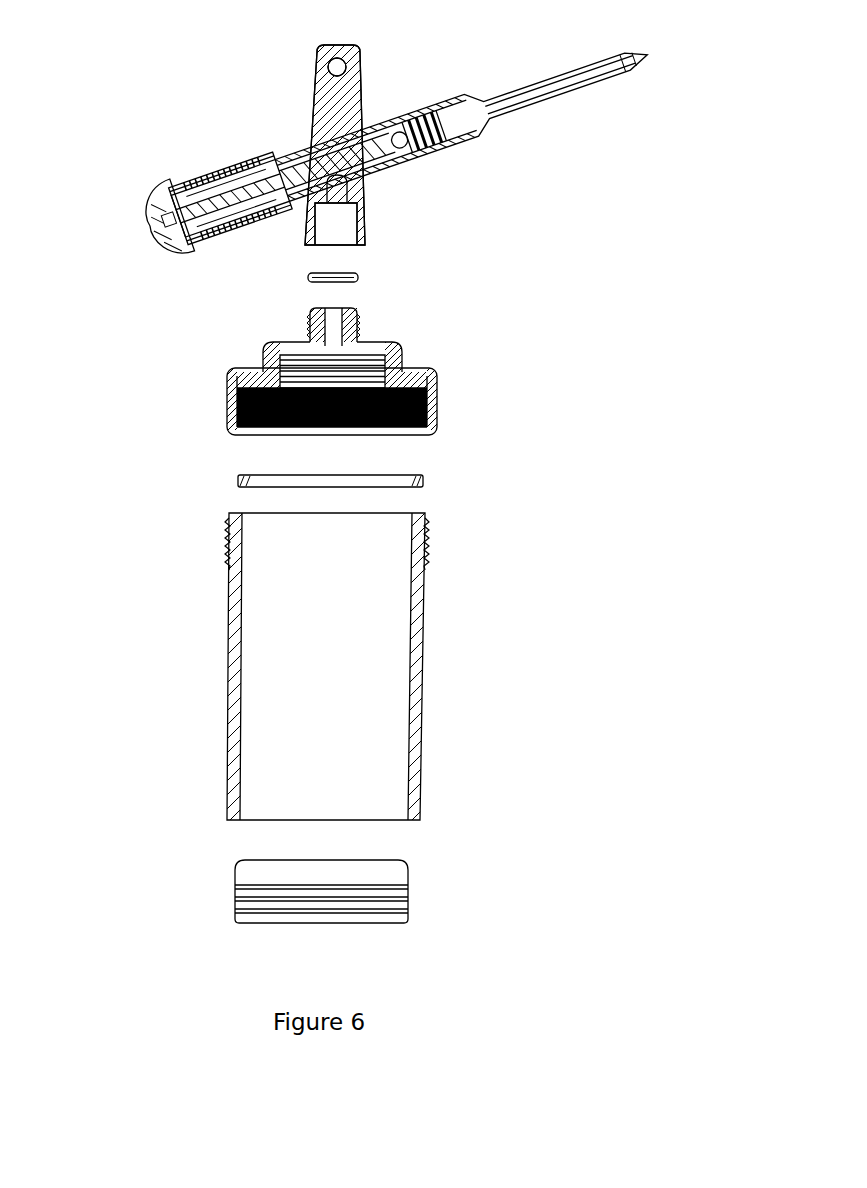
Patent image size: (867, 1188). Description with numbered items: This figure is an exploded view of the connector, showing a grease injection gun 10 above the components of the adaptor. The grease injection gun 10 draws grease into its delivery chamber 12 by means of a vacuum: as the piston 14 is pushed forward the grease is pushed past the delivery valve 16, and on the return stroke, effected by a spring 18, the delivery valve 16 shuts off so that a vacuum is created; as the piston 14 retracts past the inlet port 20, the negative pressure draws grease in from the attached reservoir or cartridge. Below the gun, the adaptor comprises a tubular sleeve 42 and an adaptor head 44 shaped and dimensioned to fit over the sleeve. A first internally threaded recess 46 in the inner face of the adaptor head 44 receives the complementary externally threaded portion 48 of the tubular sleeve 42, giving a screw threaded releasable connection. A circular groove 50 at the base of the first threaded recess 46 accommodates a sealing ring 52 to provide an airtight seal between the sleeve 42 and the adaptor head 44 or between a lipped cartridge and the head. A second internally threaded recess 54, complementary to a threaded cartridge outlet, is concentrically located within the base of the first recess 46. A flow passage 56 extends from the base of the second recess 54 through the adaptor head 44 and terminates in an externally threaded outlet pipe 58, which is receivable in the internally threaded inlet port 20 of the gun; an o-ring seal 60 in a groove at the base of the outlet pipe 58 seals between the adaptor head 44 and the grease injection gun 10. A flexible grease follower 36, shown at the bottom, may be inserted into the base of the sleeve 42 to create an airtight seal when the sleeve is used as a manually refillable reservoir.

The grease injection gun 10 is at (310, 77).
The delivery chamber 12 is at (318, 142).
The piston 14 is at (265, 163).
The delivery valve 16 is at (410, 158).
The spring 18 is at (178, 197).
The inlet port 20 is at (335, 227).
The grease follower 36 is at (303, 877).
The tubular sleeve 42 is at (295, 676).
The adaptor head 44 is at (265, 348).
The first internally threaded recess 46 is at (435, 420).
The externally threaded portion 48 is at (427, 545).
The circular groove 50 is at (243, 384).
The sealing ring 52 is at (238, 478).
The second internally threaded recess 54 is at (397, 366).
The flow passage 56 is at (333, 335).
The externally threaded outlet pipe 58 is at (360, 313).
The o-ring seal 60 is at (300, 278).